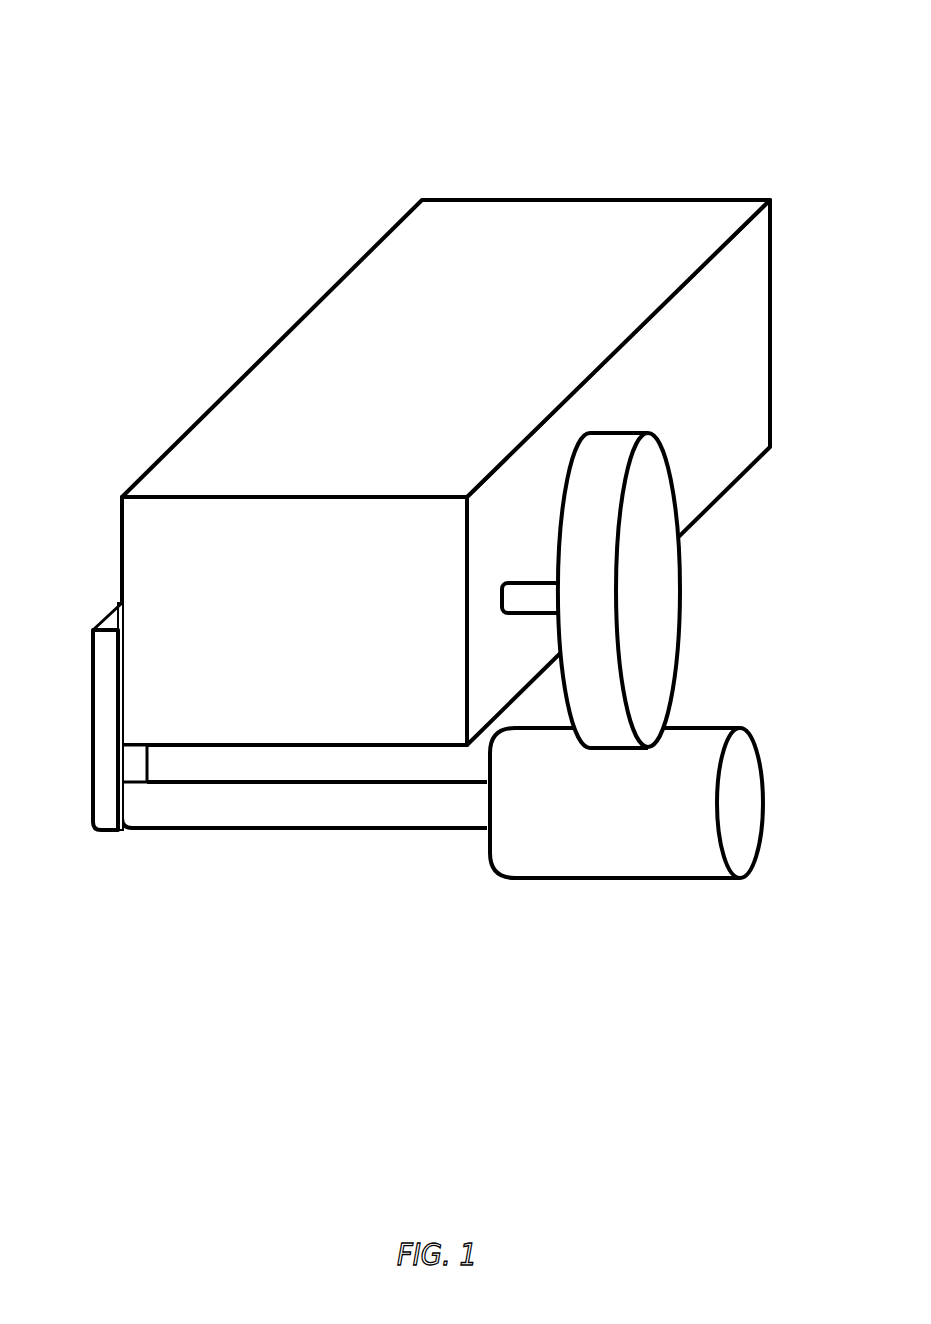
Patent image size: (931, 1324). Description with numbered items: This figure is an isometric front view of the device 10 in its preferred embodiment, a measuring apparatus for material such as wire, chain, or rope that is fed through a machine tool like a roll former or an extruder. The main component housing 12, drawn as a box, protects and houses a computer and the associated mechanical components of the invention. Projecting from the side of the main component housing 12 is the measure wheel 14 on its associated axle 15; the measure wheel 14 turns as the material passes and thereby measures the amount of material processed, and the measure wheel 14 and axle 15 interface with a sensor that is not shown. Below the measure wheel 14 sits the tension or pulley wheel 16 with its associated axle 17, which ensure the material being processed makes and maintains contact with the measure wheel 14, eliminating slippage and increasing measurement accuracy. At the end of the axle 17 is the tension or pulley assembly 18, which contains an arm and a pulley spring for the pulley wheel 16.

The device 10 is at (537, 62).
The main component housing 12 is at (486, 498).
The measure wheel 14 is at (657, 593).
The axle 15 is at (523, 592).
The pulley wheel 16 is at (743, 792).
The axle 17 is at (315, 805).
The pulley assembly 18 is at (101, 713).